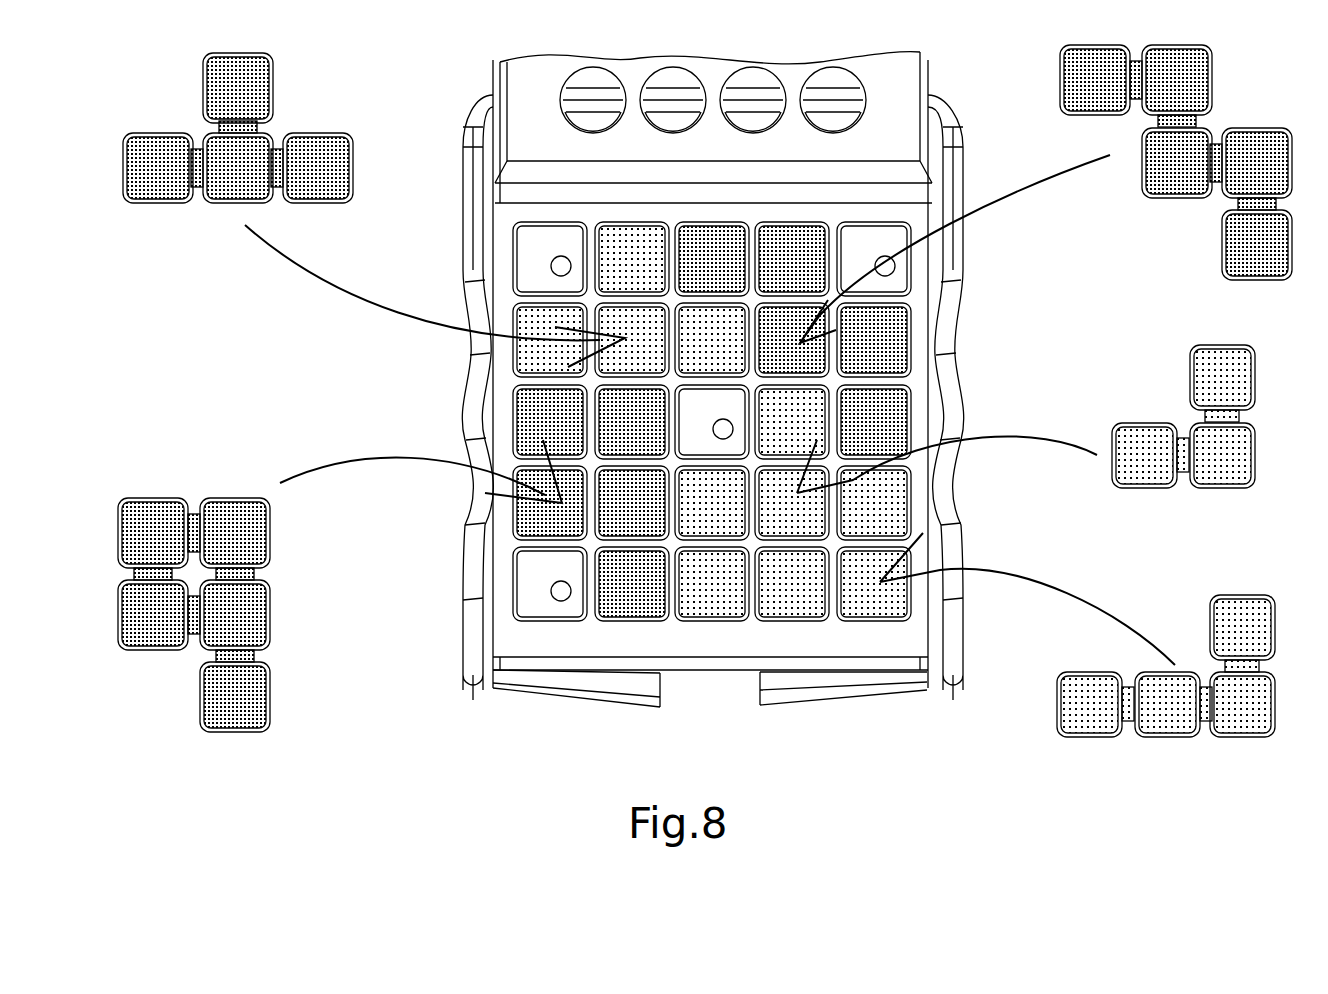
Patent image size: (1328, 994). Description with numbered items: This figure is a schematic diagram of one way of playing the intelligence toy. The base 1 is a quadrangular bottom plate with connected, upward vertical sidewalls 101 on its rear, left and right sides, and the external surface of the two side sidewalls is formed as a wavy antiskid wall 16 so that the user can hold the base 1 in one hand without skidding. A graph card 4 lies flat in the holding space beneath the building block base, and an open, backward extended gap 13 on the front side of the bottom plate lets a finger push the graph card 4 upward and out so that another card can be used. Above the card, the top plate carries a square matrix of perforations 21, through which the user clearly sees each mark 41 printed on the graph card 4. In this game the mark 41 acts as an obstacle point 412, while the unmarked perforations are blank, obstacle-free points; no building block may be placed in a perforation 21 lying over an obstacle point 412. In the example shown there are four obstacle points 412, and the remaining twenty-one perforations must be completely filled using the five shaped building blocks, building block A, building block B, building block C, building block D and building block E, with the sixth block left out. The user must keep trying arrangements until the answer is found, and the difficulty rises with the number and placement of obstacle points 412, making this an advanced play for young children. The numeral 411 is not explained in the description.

The base 1 is at (470, 115).
The vertical sidewalls 101 is at (473, 663).
The wavy antiskid wall 16 is at (470, 567).
The graph card 4 is at (688, 673).
The gap 13 is at (760, 690).
The perforations 21 is at (823, 590).
The mark 41 is at (724, 507).
The recessed cell 411 is at (900, 333).
The obstacle point 412 is at (532, 247).
The building block A is at (1147, 420).
The building block B is at (1247, 595).
The building block C is at (320, 133).
The building block D is at (152, 500).
The building block E is at (1255, 128).